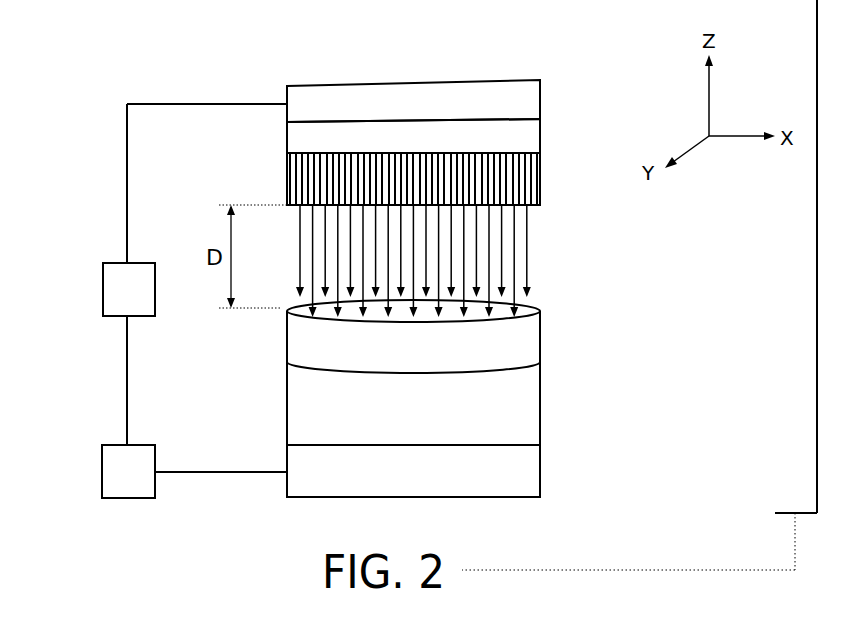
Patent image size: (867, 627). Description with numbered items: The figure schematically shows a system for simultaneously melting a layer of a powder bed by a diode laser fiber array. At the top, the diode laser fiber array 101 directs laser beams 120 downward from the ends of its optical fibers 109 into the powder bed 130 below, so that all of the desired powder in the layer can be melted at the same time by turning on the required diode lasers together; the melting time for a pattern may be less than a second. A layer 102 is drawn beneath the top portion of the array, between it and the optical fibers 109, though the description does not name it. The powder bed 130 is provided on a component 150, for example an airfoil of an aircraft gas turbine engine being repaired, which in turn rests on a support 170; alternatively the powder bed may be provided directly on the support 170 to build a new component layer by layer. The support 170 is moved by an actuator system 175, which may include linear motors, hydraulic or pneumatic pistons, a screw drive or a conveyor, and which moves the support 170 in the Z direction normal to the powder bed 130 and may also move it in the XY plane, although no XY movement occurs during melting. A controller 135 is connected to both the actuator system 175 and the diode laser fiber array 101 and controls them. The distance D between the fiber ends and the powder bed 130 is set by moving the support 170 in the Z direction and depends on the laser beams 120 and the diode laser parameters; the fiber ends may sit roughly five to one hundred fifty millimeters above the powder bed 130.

The diode laser fiber array 101 is at (527, 100).
The electrode layer 102 is at (527, 135).
The optical fibers 109 is at (540, 182).
The laser beams 120 is at (523, 276).
The powder bed 130 is at (527, 340).
The component 150 is at (527, 410).
The support 170 is at (527, 467).
The controller 135 is at (117, 281).
The actuator system 175 is at (117, 463).